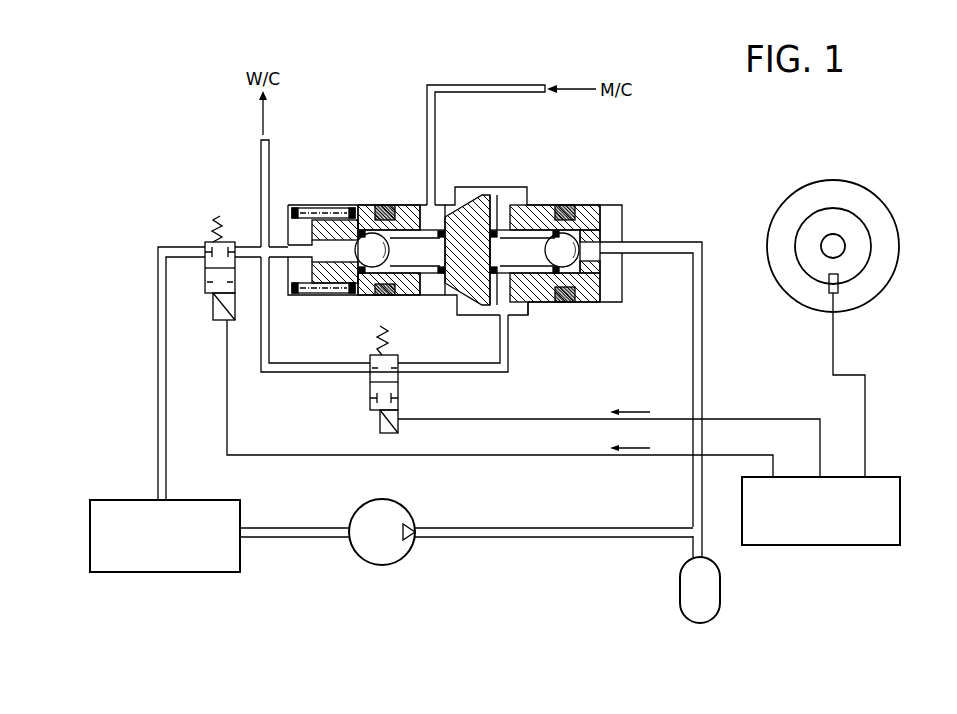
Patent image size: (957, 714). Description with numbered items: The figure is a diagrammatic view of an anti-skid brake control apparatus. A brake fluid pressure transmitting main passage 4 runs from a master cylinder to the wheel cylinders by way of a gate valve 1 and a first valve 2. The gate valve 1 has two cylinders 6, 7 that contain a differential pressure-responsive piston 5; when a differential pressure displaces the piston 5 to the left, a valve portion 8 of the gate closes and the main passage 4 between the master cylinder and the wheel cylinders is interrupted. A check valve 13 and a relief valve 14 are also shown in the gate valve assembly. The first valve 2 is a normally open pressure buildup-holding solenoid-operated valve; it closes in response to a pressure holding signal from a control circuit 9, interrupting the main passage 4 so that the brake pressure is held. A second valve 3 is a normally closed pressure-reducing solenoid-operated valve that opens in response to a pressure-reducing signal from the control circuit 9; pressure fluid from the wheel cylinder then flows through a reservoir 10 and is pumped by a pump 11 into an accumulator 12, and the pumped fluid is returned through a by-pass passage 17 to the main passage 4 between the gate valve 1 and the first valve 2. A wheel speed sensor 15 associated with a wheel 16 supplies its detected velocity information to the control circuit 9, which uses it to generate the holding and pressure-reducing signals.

The gate valve 1 is at (495, 183).
The first valve 2 is at (369, 397).
The second valve 3 is at (203, 246).
The main passage 4 is at (494, 85).
The piston 5 is at (541, 206).
The cylinder 6 is at (543, 300).
The cylinder 7 is at (415, 297).
The valve portion 8 is at (464, 198).
The control circuit 9 is at (833, 545).
The reservoir 10 is at (242, 518).
The pump 11 is at (410, 511).
The accumulator 12 is at (680, 585).
The check valve 13 is at (592, 247).
The relief valve 14 is at (369, 226).
The speed sensor 15 is at (838, 290).
The wheel 16 is at (890, 220).
The by-pass passage 17 is at (168, 392).